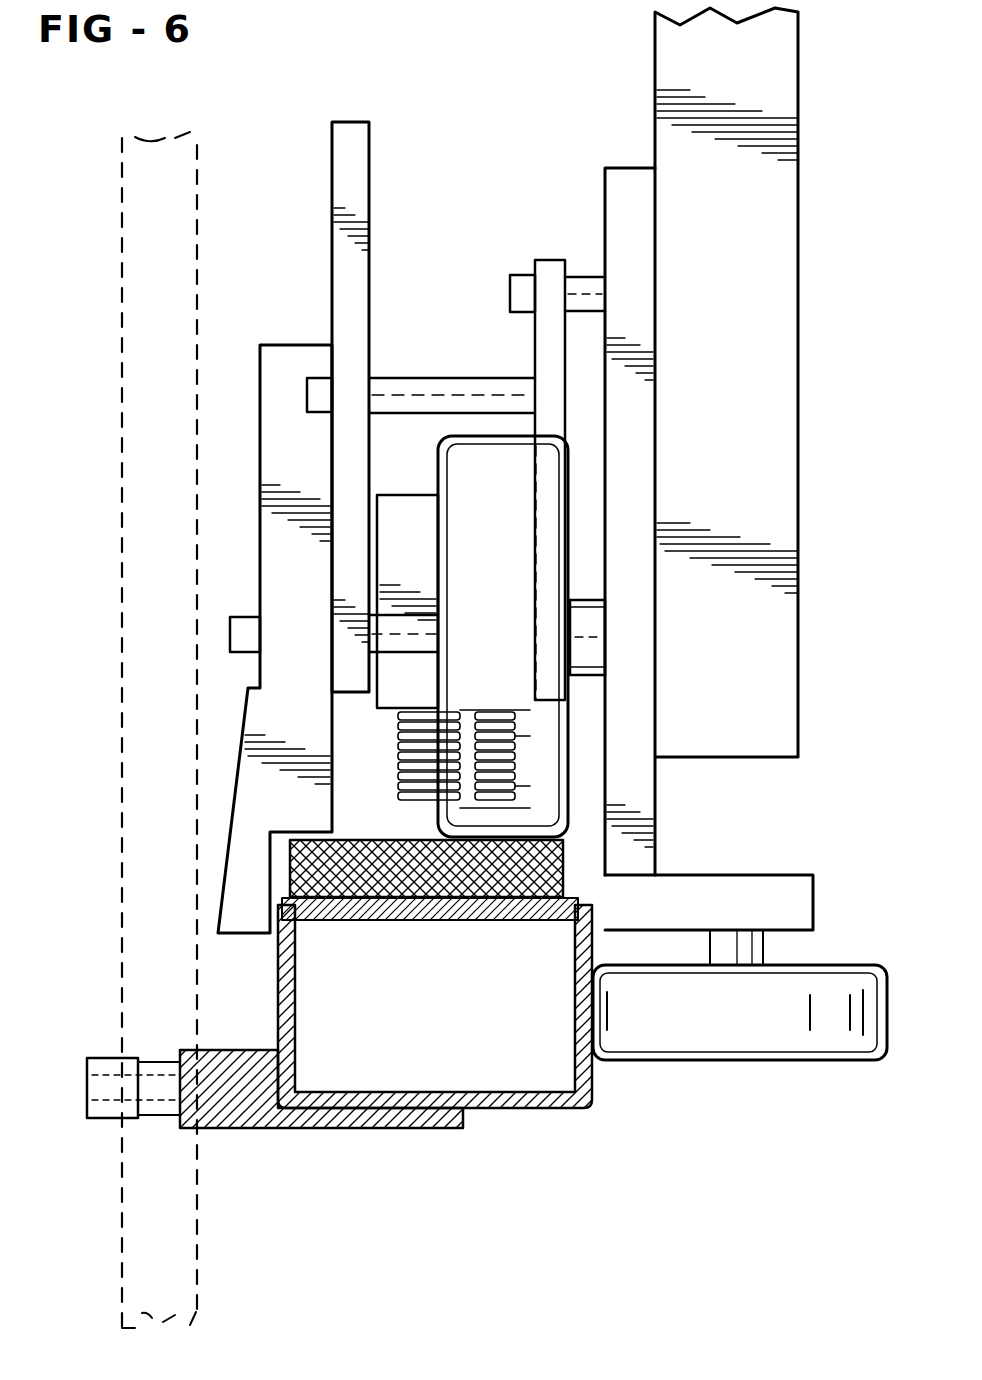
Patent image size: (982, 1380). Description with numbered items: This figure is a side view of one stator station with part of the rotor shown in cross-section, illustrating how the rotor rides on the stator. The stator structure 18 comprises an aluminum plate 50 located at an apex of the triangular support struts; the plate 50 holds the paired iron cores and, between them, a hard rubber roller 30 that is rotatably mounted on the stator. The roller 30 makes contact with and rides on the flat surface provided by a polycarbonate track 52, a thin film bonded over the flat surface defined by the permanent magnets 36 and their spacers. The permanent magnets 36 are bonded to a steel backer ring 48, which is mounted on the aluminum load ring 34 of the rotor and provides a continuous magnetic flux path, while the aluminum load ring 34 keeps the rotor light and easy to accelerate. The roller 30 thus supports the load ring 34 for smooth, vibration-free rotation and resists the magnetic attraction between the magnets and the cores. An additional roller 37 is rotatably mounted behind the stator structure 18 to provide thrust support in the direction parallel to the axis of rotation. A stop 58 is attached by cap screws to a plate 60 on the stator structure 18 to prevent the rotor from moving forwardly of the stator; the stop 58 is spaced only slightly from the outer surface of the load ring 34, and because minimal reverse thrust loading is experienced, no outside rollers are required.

The stator structure 18 is at (765, 289).
The plate 50 is at (605, 197).
The plate 60 is at (369, 228).
The stop 58 is at (250, 700).
The roller 30 is at (515, 537).
The polycarbonate track 52 is at (372, 838).
The permanent magnets 36 is at (567, 877).
The backer ring 48 is at (325, 927).
The load ring 34 is at (530, 1110).
The roller 37 is at (750, 1062).